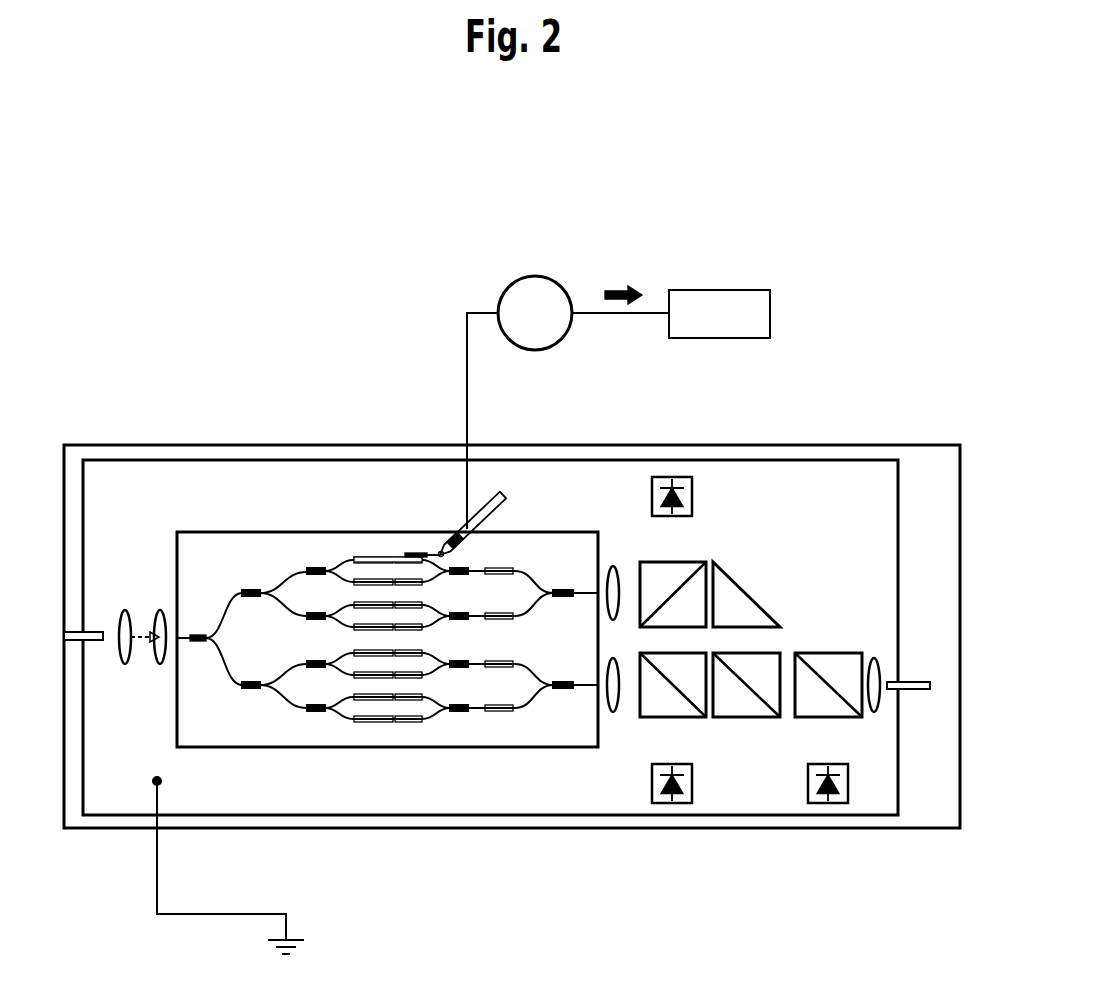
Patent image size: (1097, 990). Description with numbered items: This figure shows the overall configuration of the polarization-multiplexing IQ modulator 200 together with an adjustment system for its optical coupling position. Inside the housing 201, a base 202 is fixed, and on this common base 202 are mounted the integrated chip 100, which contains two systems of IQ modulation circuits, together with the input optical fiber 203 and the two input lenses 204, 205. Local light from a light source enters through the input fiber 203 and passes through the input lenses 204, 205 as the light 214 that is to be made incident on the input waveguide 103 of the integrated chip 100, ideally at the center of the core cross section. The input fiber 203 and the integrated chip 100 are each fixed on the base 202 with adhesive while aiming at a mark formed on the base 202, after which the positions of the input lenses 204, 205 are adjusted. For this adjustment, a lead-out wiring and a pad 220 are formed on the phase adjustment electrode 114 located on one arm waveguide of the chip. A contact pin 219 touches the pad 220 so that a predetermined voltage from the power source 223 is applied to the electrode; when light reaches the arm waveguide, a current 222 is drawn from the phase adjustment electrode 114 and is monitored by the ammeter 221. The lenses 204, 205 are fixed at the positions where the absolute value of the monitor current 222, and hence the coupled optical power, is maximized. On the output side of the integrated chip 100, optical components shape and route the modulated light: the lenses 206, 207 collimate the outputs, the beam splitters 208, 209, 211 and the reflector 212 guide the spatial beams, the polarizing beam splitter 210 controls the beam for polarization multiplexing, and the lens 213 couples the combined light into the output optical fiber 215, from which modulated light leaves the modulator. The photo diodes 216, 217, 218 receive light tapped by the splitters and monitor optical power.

The polarization-multiplexing IQ modulator 200 is at (512, 150).
The housing 201 is at (118, 444).
The base 202 is at (203, 459).
The input optical fiber 203 is at (95, 631).
The input lens 204 is at (126, 665).
The input lens 205 is at (162, 665).
The light beam 214 is at (140, 628).
The integrated chip 100 is at (387, 611).
The input waveguide 103 is at (192, 645).
The phase adjustment electrode 114 is at (372, 556).
The pad 220 is at (423, 552).
The contact pin 219 is at (506, 498).
The ammeter 221 is at (535, 275).
The current 222 is at (623, 284).
The power source 223 is at (720, 289).
The lens 206 is at (614, 566).
The lens 207 is at (614, 713).
The beam splitter 208 is at (680, 561).
The reflector 212 is at (748, 590).
The beam splitter 209 is at (668, 718).
The polarizing beam splitter 210 is at (745, 718).
The beam splitter 211 is at (830, 718).
The lens 213 is at (874, 657).
The output optical fiber 215 is at (912, 681).
The photo diode 216 is at (675, 804).
The photo diode 217 is at (831, 804).
The photo diode 218 is at (672, 476).